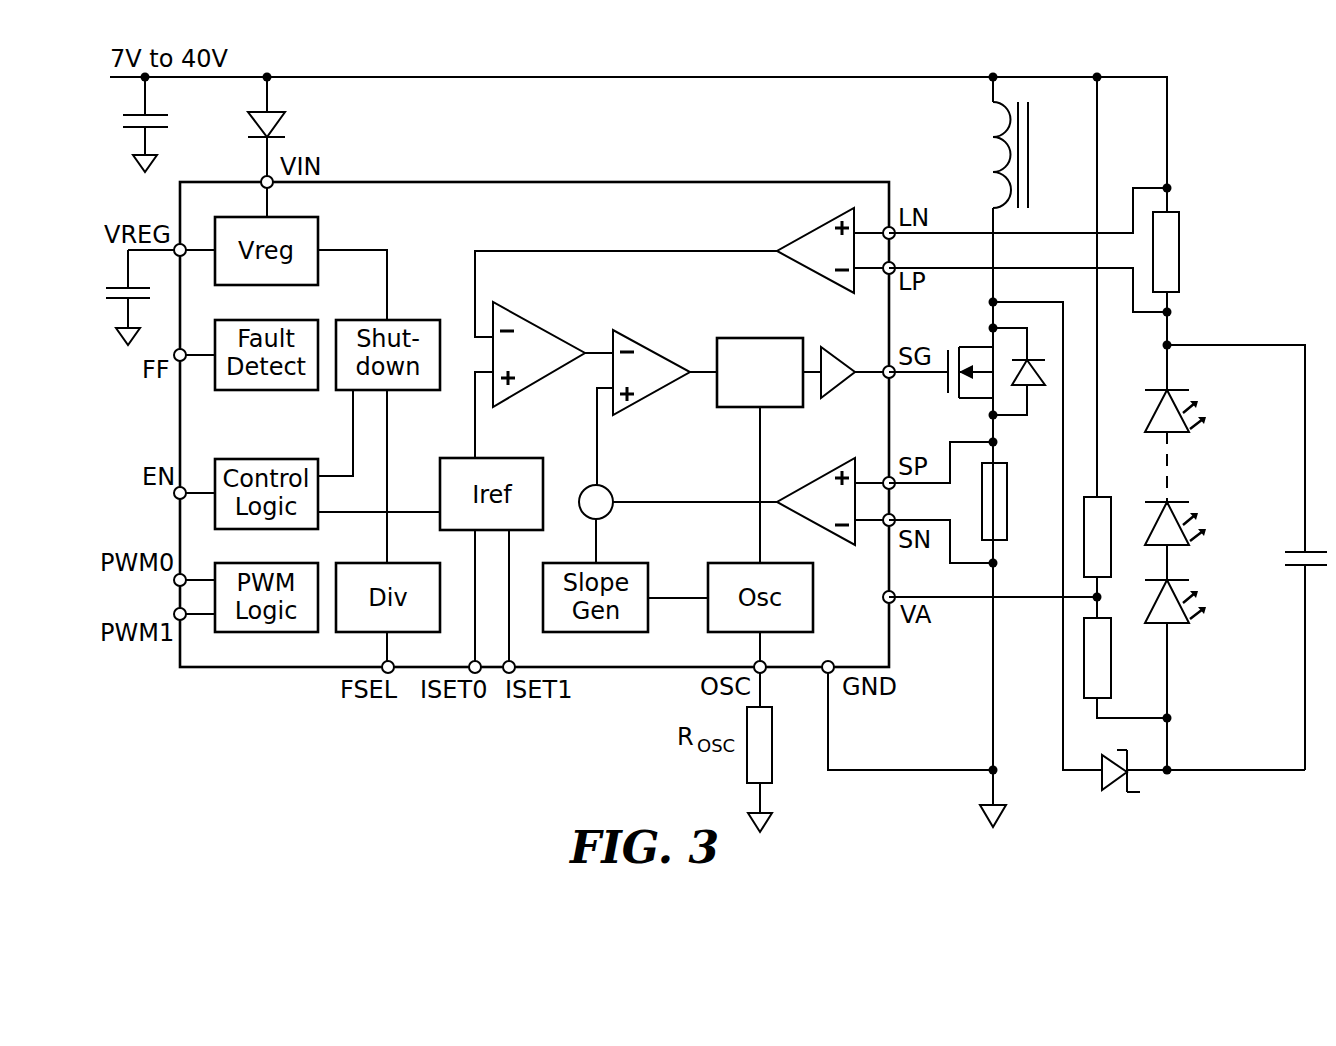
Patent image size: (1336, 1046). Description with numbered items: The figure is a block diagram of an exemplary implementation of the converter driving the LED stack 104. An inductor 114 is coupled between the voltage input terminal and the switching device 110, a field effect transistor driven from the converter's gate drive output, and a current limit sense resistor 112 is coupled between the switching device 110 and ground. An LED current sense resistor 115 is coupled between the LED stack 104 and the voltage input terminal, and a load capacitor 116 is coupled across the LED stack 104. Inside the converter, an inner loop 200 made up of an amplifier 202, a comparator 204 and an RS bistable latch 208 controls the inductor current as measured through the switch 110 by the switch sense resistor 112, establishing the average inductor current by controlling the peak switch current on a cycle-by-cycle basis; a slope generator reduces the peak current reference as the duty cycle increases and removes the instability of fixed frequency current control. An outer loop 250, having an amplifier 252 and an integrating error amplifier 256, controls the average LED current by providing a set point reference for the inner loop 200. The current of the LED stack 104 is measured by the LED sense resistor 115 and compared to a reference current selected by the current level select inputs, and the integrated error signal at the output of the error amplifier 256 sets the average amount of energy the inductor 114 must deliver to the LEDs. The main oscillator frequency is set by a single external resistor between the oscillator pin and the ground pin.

The LED stack 104 is at (1193, 372).
The switching device 110 is at (978, 339).
The current limit sense resistor (RSS) 112 is at (982, 490).
The inductor 114 is at (993, 133).
The LED current sense resistor (RSL) 115 is at (1180, 250).
The load capacitor 116 is at (1285, 562).
The inner loop 200 is at (693, 457).
The amplifier (AS) 202 is at (812, 481).
The comparator (AC) 204 is at (648, 345).
The RS bistable latch 208 is at (760, 338).
The outer loop 250 is at (563, 223).
The amplifier (AL) 252 is at (818, 222).
The integrating error amplifier (AE) 256 is at (548, 342).